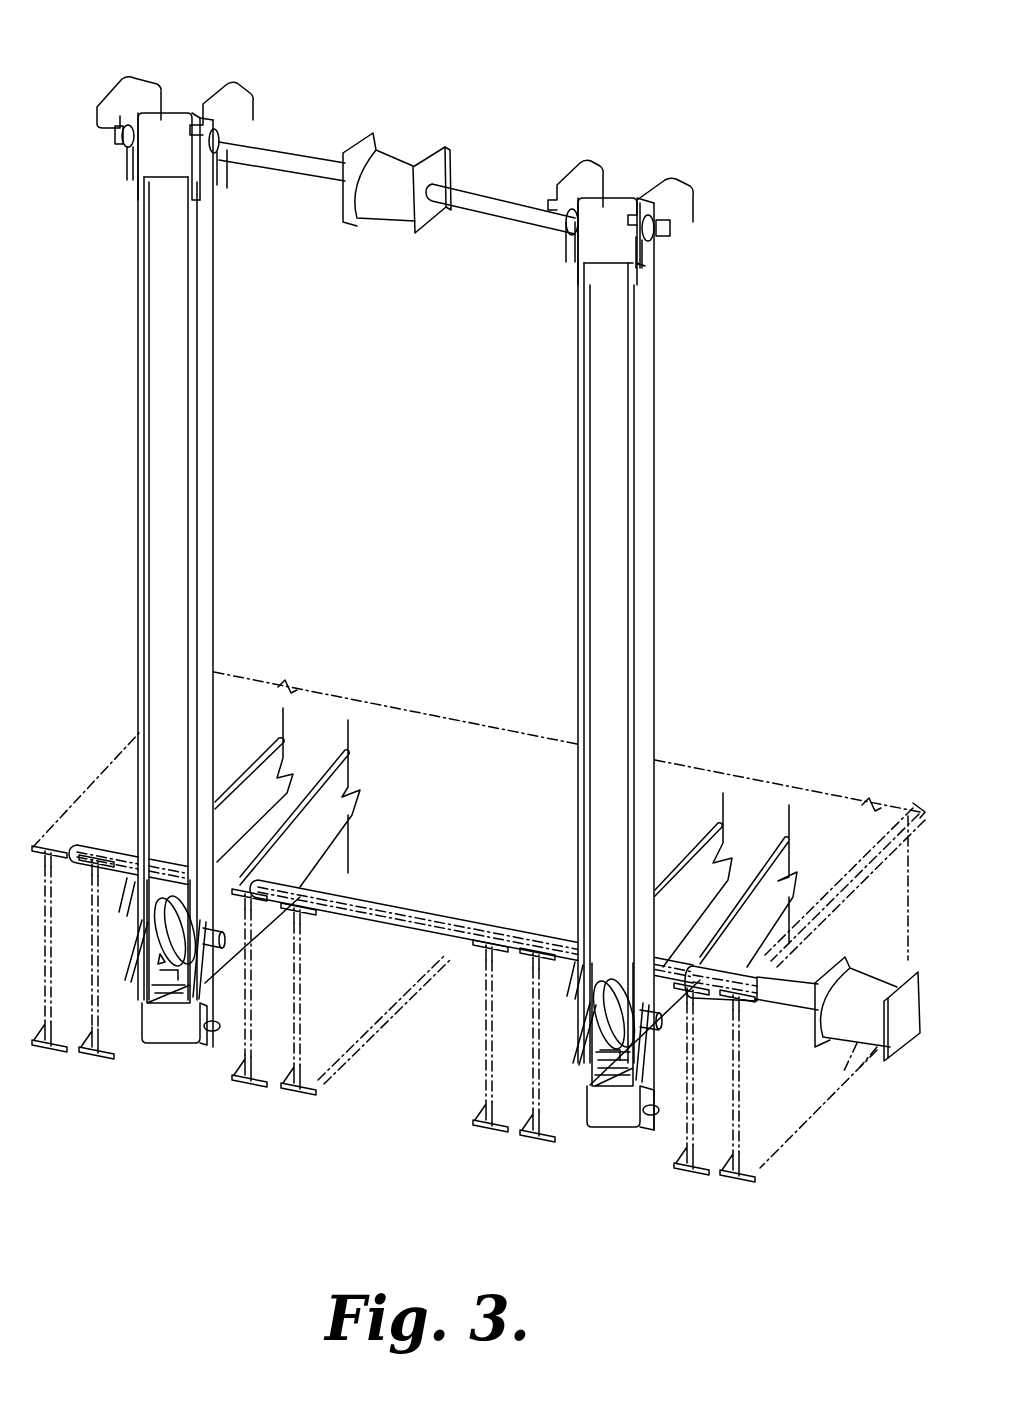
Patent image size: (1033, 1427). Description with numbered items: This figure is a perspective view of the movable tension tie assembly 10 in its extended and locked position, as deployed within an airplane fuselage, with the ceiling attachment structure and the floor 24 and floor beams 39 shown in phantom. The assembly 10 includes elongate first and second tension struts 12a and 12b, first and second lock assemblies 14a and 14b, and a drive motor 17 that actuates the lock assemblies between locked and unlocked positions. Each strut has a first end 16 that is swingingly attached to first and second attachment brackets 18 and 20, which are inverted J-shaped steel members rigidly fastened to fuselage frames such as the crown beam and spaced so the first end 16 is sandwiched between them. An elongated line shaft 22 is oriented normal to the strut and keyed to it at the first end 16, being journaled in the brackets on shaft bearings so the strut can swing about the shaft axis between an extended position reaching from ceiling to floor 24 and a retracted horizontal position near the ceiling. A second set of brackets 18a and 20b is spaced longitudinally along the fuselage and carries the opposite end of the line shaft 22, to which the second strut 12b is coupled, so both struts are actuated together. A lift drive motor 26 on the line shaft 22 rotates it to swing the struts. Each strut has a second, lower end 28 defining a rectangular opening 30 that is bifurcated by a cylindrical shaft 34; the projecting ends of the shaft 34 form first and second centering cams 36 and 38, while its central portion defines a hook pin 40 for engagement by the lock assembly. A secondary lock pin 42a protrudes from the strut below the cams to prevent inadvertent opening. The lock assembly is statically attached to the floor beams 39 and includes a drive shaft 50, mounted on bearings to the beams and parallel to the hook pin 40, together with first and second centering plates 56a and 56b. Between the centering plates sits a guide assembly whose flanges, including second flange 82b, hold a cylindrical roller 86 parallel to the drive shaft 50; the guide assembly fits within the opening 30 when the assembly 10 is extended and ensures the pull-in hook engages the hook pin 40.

The tension tie assembly 10 is at (683, 647).
The first tension strut 12a is at (641, 421).
The second tension strut 12b is at (205, 351).
The first lock assembly 14a is at (143, 1013).
The second lock assembly 14b is at (640, 1065).
The first end 16 is at (616, 230).
The drive motor 17 is at (855, 1065).
The first attachment bracket 18 is at (585, 162).
The attachment bracket 18a is at (150, 105).
The second attachment bracket 20 is at (683, 185).
The attachment bracket 20b is at (240, 118).
The line shaft 22 is at (505, 207).
The floor 24 is at (500, 735).
The lift drive motor 26 is at (403, 158).
The second end 28 is at (610, 1112).
The opening 30 is at (614, 1085).
The shaft 34 is at (165, 905).
The first centering cam 36 is at (218, 940).
The second centering cam 38 is at (128, 905).
The floor beams 39 is at (88, 1068).
The hook pin 40 is at (181, 873).
The first secondary lock pin 42a is at (217, 1031).
The drive shaft 50 is at (800, 1007).
The first centering plate 56a is at (762, 860).
The second centering plate 56b is at (574, 975).
The second flange 82b is at (168, 983).
The roller 86 is at (178, 1005).